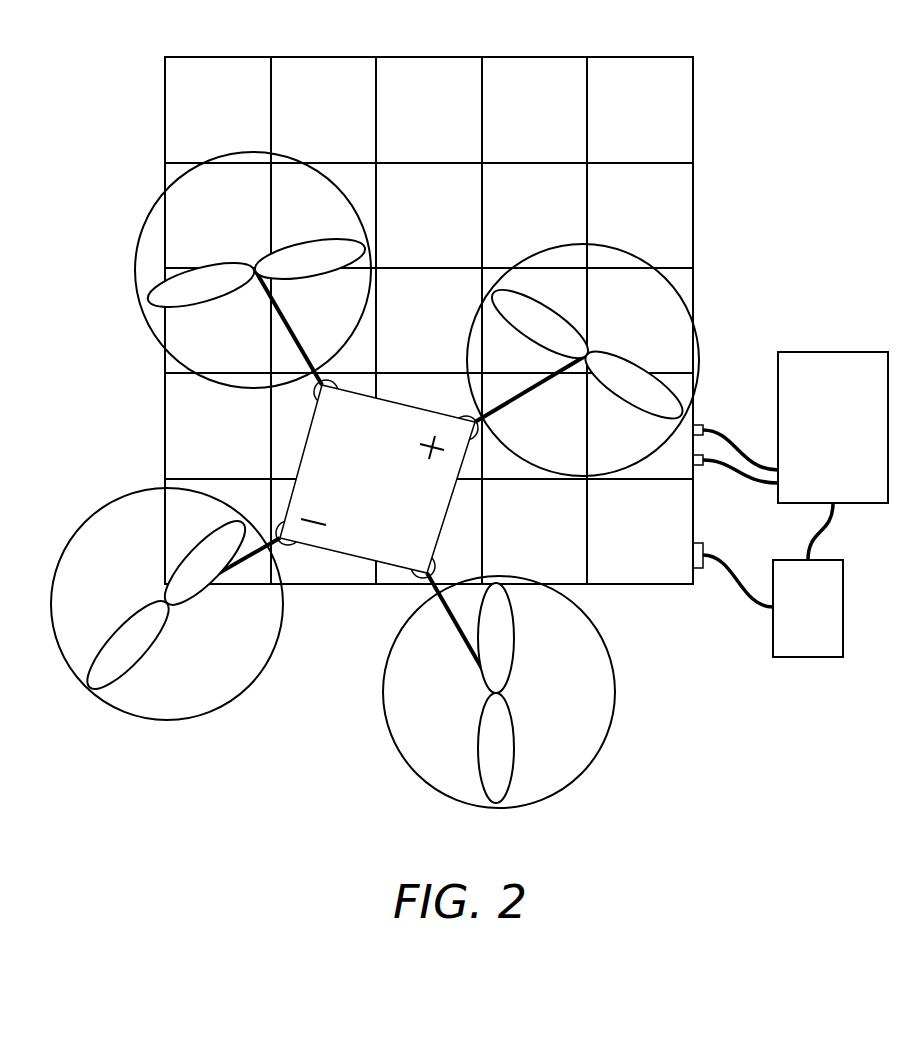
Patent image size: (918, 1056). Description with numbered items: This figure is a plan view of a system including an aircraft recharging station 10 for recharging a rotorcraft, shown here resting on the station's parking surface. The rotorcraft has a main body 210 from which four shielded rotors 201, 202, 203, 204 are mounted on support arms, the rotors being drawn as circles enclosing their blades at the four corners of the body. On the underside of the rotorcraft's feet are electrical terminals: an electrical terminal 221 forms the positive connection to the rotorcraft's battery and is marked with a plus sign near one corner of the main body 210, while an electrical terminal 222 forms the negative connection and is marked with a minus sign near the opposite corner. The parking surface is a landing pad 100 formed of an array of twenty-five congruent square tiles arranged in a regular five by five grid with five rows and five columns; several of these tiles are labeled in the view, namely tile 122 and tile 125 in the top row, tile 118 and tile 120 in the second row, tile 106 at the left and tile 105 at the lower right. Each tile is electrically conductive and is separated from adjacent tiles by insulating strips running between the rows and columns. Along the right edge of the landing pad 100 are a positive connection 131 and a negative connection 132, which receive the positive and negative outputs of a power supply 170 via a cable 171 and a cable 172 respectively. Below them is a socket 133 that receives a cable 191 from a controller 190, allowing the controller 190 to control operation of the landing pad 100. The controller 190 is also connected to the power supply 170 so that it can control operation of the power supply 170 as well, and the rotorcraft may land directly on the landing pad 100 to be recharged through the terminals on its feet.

The aircraft recharging station 10 is at (772, 46).
The landing pad 100 is at (160, 83).
The square tile 105 is at (640, 531).
The square tile 106 is at (218, 426).
The square tile 118 is at (429, 215).
The square tile 120 is at (640, 215).
The square tile 122 is at (323, 110).
The square tile 125 is at (640, 110).
The positive connection 131 is at (705, 467).
The negative connection 132 is at (706, 425).
The socket 133 is at (705, 571).
The power supply 170 is at (833, 456).
The cable 171 is at (760, 485).
The cable 172 is at (737, 441).
The controller 190 is at (808, 608).
The cable 191 is at (740, 577).
The shielded rotor 201 is at (90, 688).
The shielded rotor 202 is at (147, 300).
The shielded rotor 203 is at (663, 387).
The shielded rotor 204 is at (498, 806).
The main body 210 is at (377, 479).
The electrical terminal 221 is at (454, 403).
The electrical terminal 222 is at (298, 553).